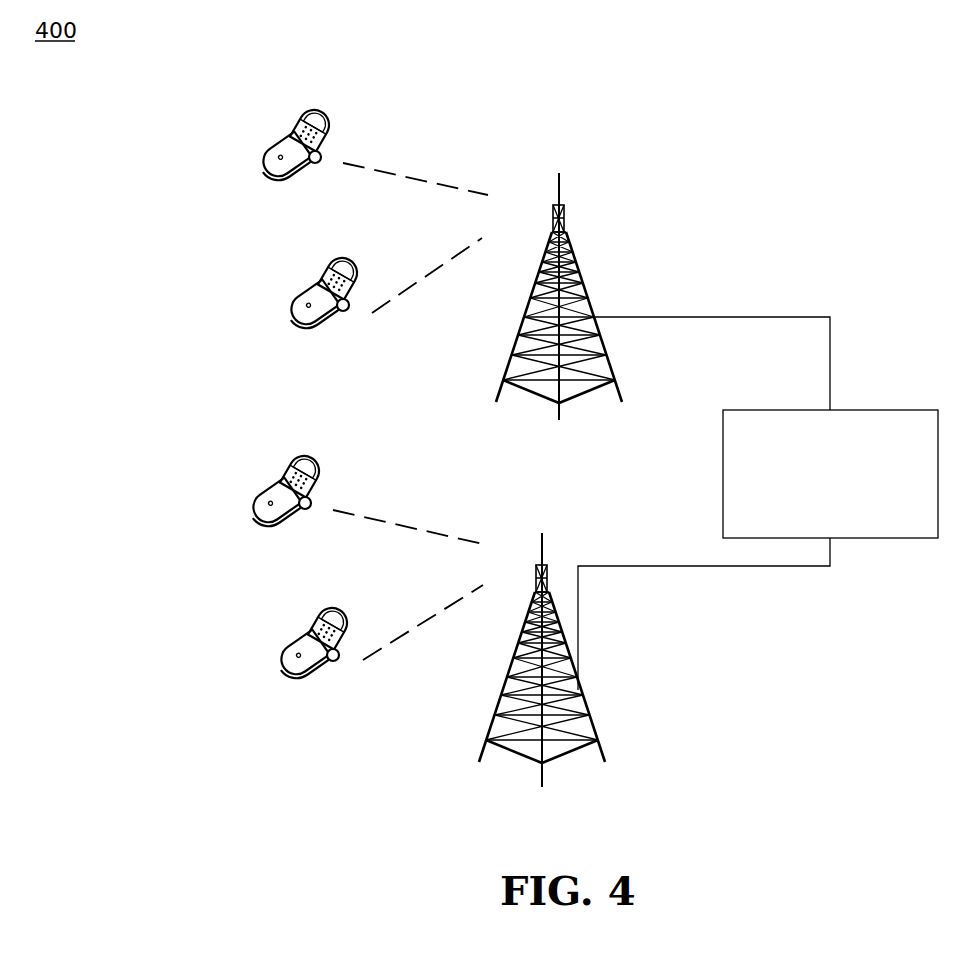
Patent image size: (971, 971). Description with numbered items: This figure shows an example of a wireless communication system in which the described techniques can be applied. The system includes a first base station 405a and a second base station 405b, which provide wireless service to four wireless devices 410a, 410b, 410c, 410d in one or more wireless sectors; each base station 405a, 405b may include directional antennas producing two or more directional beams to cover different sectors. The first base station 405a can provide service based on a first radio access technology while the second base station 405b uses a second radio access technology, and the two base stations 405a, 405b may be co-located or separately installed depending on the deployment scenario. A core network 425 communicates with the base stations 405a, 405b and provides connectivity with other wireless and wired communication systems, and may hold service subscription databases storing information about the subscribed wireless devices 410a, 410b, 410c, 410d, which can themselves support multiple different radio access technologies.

The first base station 405a is at (575, 260).
The second base station 405b is at (548, 573).
The wireless device 410a is at (300, 112).
The wireless device 410b is at (330, 265).
The wireless device 410c is at (290, 458).
The wireless device 410d is at (318, 610).
The core network 425 is at (740, 410).